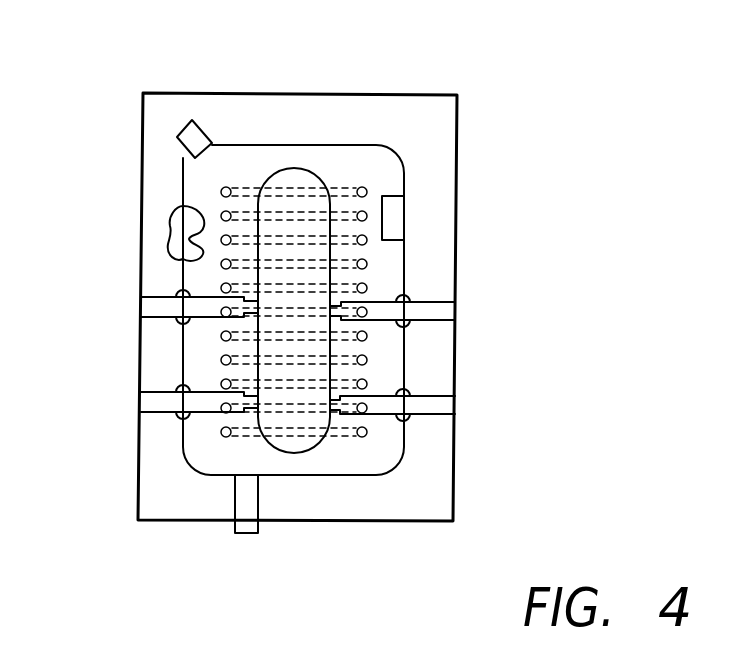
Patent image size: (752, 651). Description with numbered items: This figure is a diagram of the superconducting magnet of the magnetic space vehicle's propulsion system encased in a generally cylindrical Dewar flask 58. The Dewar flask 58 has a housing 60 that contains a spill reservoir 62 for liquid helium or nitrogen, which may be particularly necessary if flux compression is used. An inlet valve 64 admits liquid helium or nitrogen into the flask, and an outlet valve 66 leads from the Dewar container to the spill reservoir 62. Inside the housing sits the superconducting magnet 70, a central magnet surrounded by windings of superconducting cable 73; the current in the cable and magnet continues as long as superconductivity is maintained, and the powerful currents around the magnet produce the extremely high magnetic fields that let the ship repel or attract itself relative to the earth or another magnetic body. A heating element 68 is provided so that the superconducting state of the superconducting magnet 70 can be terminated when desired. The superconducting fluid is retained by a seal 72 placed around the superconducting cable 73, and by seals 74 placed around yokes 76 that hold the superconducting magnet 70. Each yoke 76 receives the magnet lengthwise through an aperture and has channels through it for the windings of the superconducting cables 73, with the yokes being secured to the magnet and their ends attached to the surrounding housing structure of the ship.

The Dewar flask 58 is at (503, 141).
The housing 60 is at (440, 94).
The spill reservoir 62 is at (437, 187).
The inlet valve 64 is at (246, 522).
The outlet valve 66 is at (178, 136).
The heating element 68 is at (405, 221).
The superconducting magnet 70 is at (303, 168).
The seal 72 is at (172, 218).
The superconducting cable 73 is at (370, 437).
The seals 74 is at (178, 292).
The yokes 76 is at (158, 308).